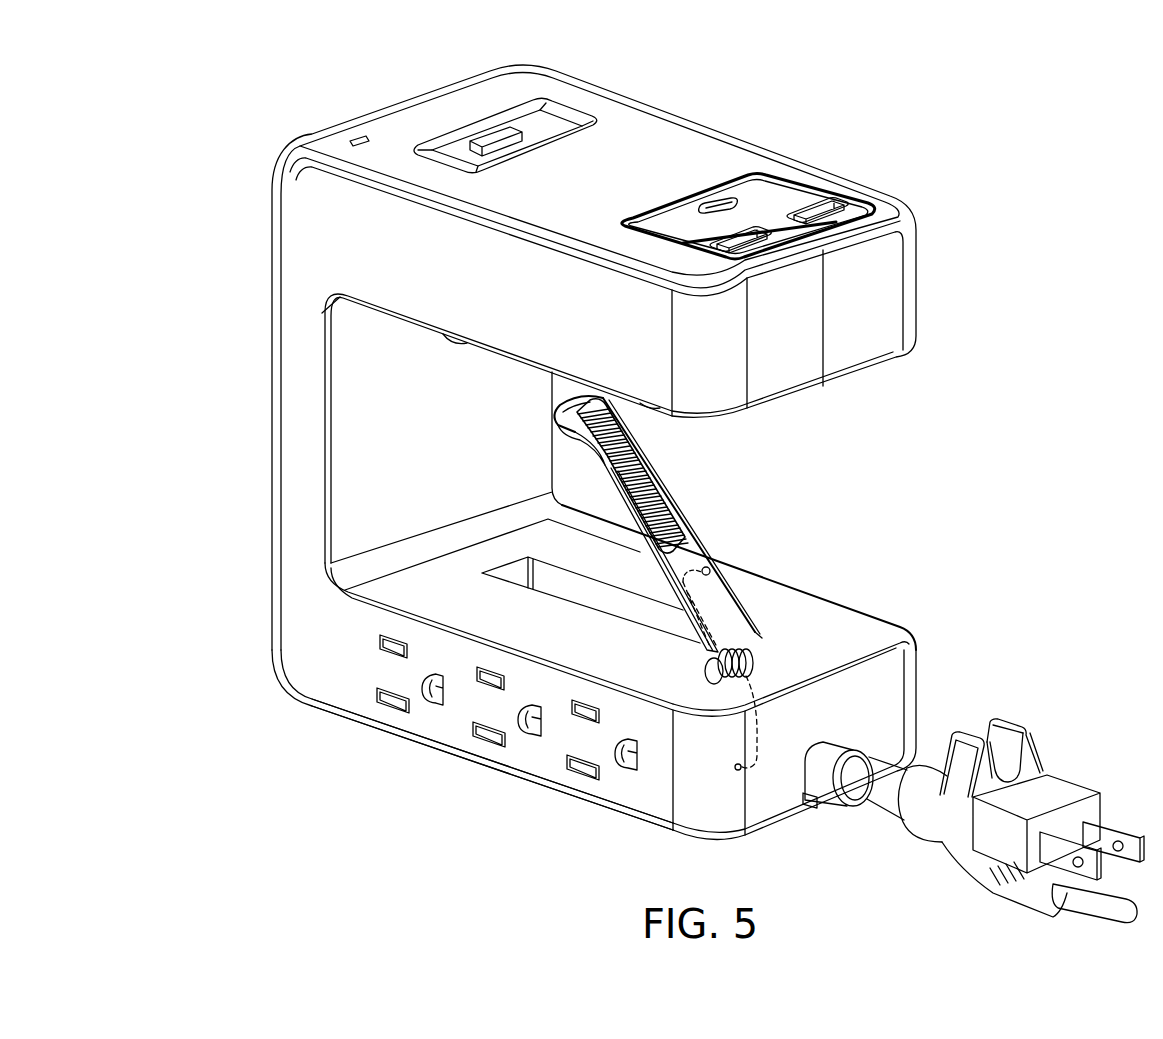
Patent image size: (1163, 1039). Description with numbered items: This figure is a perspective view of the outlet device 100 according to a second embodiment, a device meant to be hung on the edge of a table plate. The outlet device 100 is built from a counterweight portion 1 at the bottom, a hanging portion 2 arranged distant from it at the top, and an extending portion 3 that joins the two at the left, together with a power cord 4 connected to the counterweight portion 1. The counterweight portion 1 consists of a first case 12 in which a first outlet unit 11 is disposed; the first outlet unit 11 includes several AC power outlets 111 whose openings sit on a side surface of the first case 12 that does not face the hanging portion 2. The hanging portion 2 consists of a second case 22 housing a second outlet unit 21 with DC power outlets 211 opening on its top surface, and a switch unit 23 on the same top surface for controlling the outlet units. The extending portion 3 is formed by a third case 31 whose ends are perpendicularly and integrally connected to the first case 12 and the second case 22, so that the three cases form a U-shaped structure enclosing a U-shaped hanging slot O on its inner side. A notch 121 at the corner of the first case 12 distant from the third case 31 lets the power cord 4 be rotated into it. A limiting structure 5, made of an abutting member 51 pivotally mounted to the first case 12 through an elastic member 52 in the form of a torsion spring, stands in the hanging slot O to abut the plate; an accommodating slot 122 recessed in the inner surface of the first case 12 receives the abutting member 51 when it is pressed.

The outlet device 100 is at (1136, 53).
The counterweight portion 1 is at (821, 601).
The first outlet unit 11 is at (380, 803).
The AC power outlet 111 is at (394, 702).
The first case 12 is at (627, 790).
The notch 121 is at (810, 811).
The accommodating slot 122 is at (521, 557).
The hanging portion 2 is at (921, 281).
The second outlet unit 21 is at (712, 73).
The DC power outlet 211 is at (716, 199).
The second case 22 is at (661, 137).
The switch unit 23 is at (517, 143).
The extending portion 3 is at (269, 472).
The third case 31 is at (297, 392).
The power cord 4 is at (1059, 779).
The limiting structure 5 is at (712, 549).
The abutting member 51 is at (680, 494).
The elastic member 52 is at (752, 668).
The U-shaped hanging slot O is at (864, 488).